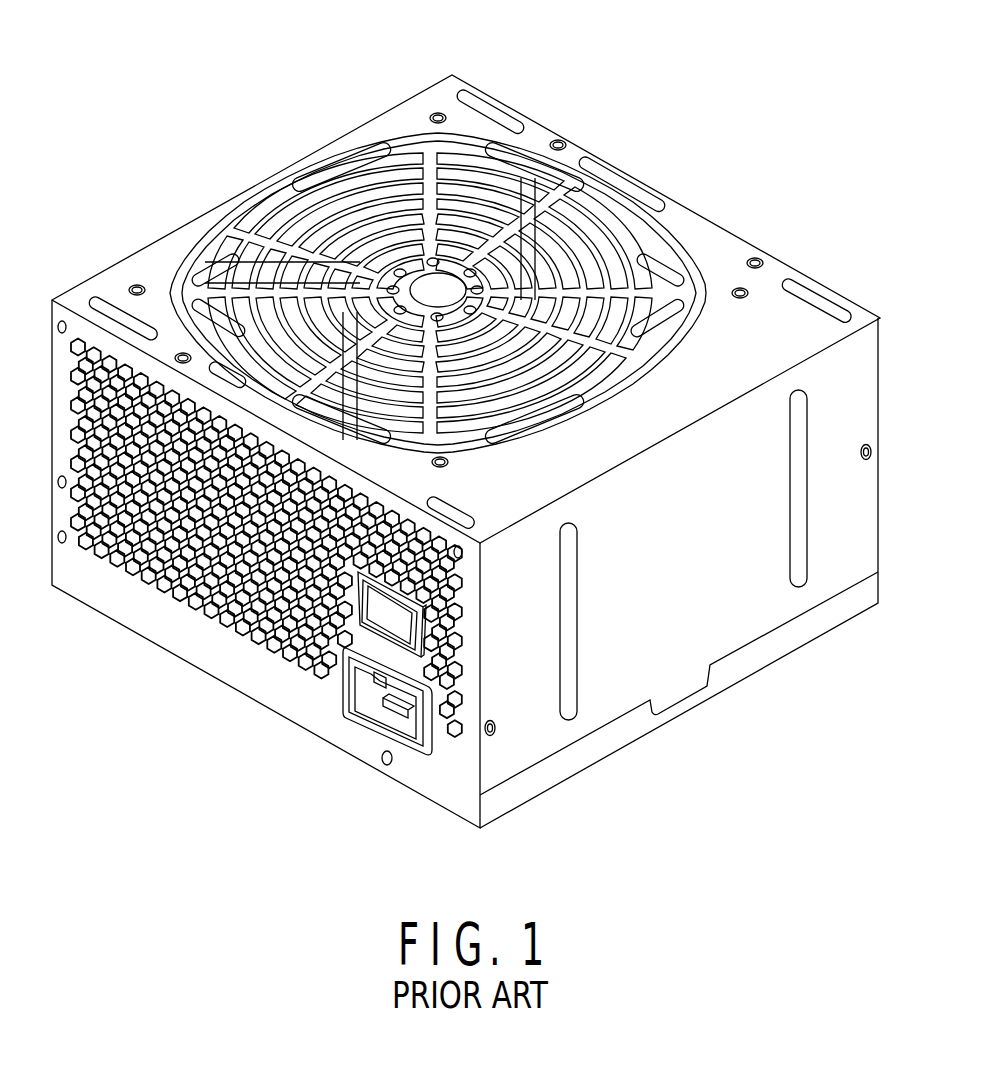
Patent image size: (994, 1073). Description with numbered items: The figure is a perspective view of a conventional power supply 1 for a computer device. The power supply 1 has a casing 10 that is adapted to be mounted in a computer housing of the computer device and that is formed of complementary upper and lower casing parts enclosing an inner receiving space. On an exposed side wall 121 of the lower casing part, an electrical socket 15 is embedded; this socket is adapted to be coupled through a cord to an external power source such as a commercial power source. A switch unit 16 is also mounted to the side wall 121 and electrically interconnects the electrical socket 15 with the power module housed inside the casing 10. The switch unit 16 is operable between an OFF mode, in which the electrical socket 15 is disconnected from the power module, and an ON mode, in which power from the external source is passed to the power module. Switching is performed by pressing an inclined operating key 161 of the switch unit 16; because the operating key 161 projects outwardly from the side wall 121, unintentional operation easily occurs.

The power supply 1 is at (531, 100).
The casing 10 is at (771, 248).
The side wall 121 is at (175, 627).
The electrical socket 15 is at (385, 716).
The switch unit 16 is at (423, 638).
The operating key 161 is at (382, 612).